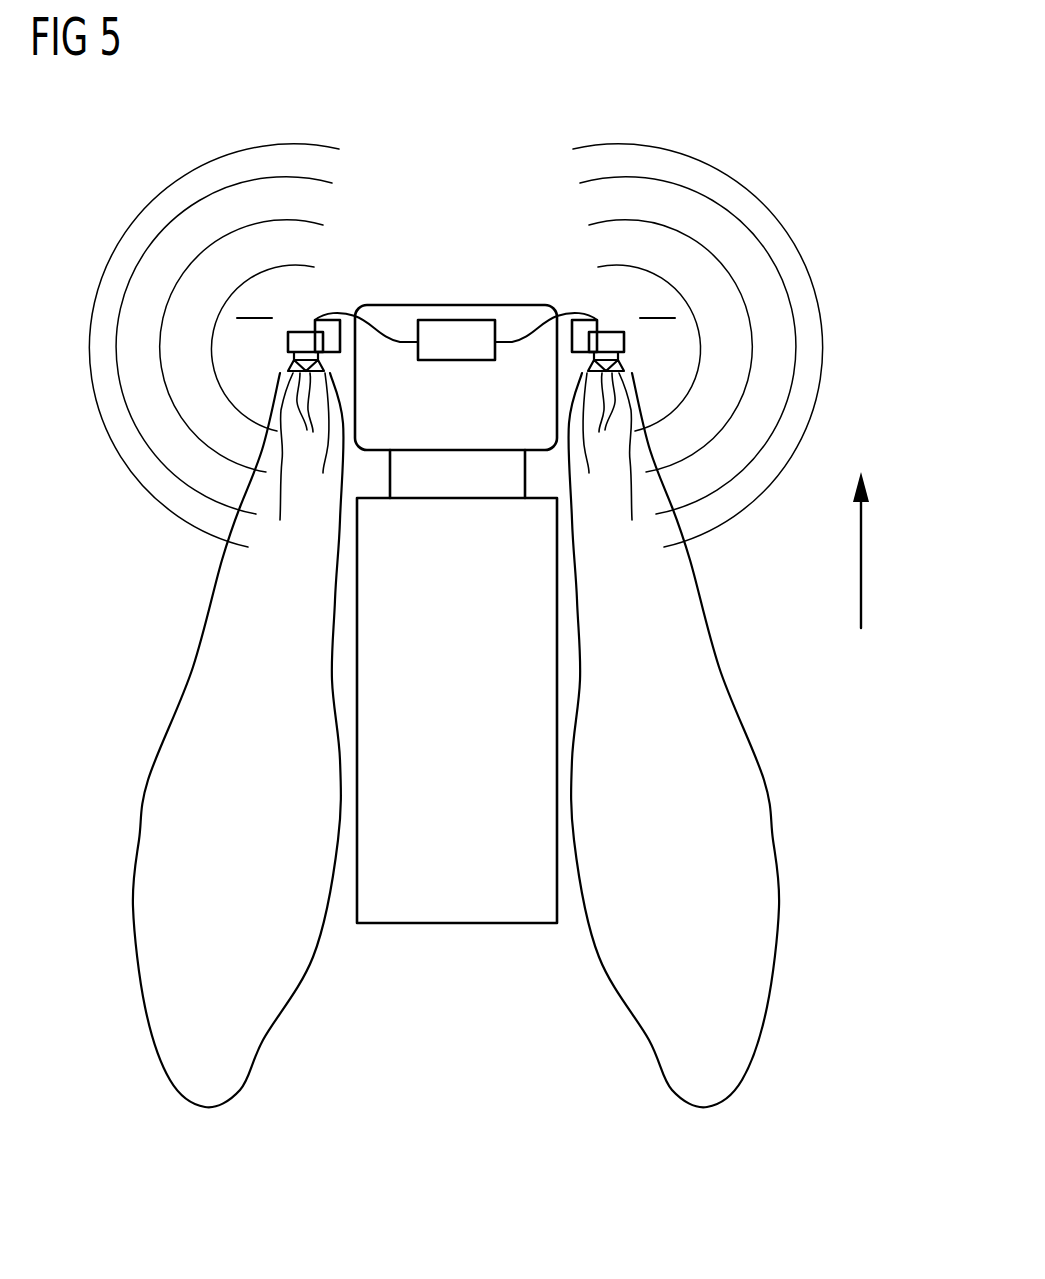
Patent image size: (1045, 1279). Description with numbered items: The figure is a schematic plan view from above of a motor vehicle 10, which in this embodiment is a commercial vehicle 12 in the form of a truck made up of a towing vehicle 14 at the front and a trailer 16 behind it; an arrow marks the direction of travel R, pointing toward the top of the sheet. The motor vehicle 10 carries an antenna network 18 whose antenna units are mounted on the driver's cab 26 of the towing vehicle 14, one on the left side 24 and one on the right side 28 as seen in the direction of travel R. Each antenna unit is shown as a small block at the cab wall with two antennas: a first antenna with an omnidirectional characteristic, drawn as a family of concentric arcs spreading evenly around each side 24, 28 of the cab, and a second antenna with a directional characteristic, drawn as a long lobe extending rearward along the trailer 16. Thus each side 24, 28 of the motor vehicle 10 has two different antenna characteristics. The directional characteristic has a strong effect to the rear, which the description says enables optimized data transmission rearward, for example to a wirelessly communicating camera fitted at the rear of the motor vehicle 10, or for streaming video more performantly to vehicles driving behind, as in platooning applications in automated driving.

The motor vehicle 10 is at (456, 536).
The commercial vehicle 12 is at (456, 536).
The towing vehicle 14 is at (456, 287).
The trailer 16 is at (478, 741).
The antenna network 18 is at (527, 268).
The left side 24 is at (254, 301).
The driver's cab 26 is at (393, 305).
The right side 28 is at (657, 301).
The direction of travel R is at (861, 558).